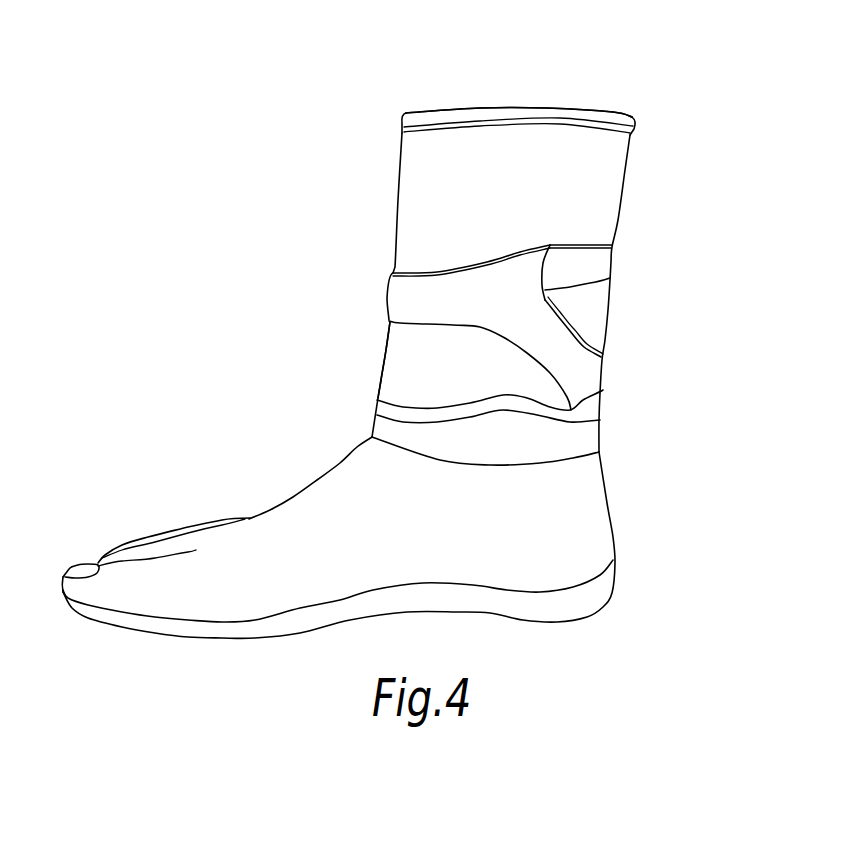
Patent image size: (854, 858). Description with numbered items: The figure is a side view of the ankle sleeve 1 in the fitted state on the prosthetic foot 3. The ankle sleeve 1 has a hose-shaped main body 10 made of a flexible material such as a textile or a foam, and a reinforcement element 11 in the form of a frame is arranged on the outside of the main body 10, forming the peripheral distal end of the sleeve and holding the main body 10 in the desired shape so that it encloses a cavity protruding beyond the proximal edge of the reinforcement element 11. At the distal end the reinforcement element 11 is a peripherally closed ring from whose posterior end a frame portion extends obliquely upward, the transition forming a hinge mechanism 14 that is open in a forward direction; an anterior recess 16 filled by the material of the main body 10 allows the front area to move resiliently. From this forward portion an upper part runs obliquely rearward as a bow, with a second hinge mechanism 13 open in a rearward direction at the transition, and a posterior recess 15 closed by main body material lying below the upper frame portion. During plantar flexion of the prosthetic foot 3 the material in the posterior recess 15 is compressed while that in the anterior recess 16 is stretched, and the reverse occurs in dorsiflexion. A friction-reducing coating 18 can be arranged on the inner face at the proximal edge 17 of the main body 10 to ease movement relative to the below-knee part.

The ankle sleeve 1 is at (650, 315).
The prosthetic foot 3 is at (598, 545).
The main body 10 is at (402, 217).
The reinforcement element 11 is at (388, 295).
The hinge mechanism 13 is at (550, 245).
The hinge mechanism 14 is at (607, 390).
The posterior recess 15 is at (610, 338).
The anterior recess 16 is at (379, 359).
The proximal edge 17 is at (622, 114).
The friction-reducing coating 18 is at (423, 111).